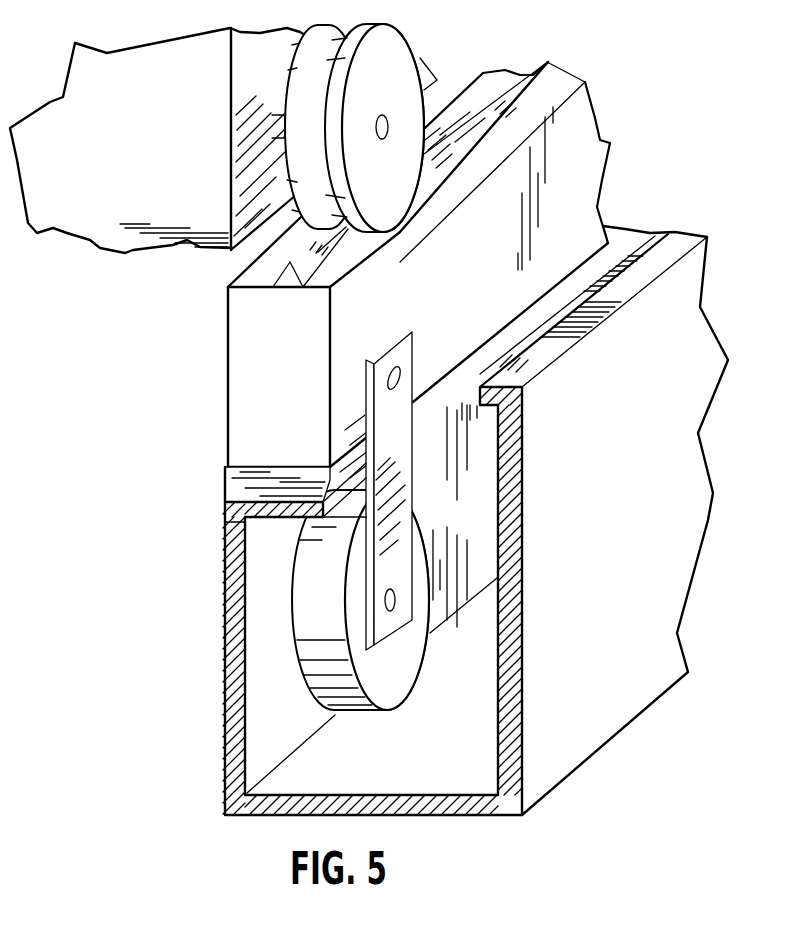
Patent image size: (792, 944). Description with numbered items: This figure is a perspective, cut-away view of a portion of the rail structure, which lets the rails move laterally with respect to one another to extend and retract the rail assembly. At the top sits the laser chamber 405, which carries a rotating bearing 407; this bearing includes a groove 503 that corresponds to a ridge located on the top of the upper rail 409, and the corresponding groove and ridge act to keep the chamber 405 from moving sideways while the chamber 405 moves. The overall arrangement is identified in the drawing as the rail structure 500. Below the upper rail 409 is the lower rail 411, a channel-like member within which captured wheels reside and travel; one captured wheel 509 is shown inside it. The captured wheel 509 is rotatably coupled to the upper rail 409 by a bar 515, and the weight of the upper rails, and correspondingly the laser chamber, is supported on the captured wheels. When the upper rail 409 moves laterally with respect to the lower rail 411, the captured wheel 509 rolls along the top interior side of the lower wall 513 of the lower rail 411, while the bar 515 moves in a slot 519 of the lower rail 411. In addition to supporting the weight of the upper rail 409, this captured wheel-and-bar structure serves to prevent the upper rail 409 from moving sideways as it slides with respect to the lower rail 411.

The laser chamber 405 is at (157, 147).
The rotating bearing 407 is at (384, 63).
The groove 503 is at (312, 171).
The belt 500 is at (548, 76).
The upper rail 409 is at (502, 273).
The slot 519 is at (665, 233).
The lower rail 411 is at (640, 492).
The bar 515 is at (397, 453).
The captured wheel 509 is at (292, 632).
The lower wall 513 is at (391, 796).